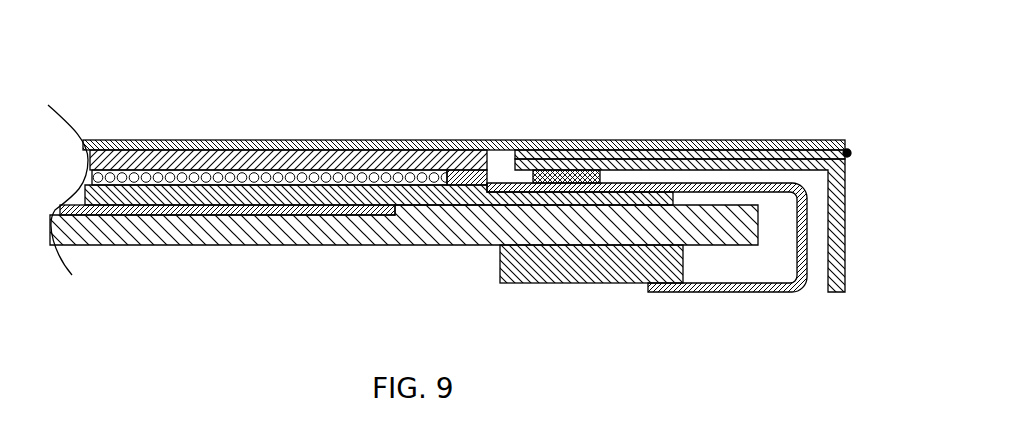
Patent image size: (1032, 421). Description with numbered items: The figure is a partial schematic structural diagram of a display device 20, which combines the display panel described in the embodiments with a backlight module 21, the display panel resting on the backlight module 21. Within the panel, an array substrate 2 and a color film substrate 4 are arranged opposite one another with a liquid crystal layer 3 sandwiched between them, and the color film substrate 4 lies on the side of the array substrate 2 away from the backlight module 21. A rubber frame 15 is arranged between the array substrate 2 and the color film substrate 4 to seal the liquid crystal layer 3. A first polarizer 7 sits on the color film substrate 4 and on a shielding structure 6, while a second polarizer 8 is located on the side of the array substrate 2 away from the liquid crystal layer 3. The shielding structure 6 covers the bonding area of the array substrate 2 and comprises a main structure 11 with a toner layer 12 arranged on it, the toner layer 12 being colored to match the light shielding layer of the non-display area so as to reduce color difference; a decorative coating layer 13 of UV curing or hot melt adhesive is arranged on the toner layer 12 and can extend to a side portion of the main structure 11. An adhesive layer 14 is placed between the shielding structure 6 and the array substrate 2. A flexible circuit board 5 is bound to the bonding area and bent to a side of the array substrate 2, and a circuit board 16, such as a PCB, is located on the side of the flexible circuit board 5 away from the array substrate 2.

The array substrate 2 is at (245, 185).
The liquid crystal layer 3 is at (285, 168).
The color film substrate 4 is at (331, 150).
The flexible circuit board 5 is at (725, 185).
The shielding structure 6 is at (618, 85).
The first polarizer 7 is at (420, 140).
The second polarizer 8 is at (380, 207).
The main structure 11 is at (677, 158).
The toner layer 12 is at (623, 148).
The decorative coating layer 13 is at (850, 156).
The adhesive layer 14 is at (558, 172).
The rubber frame 15 is at (466, 175).
The circuit board 16 is at (606, 262).
The display device 20 is at (118, 245).
The backlight module 21 is at (200, 215).